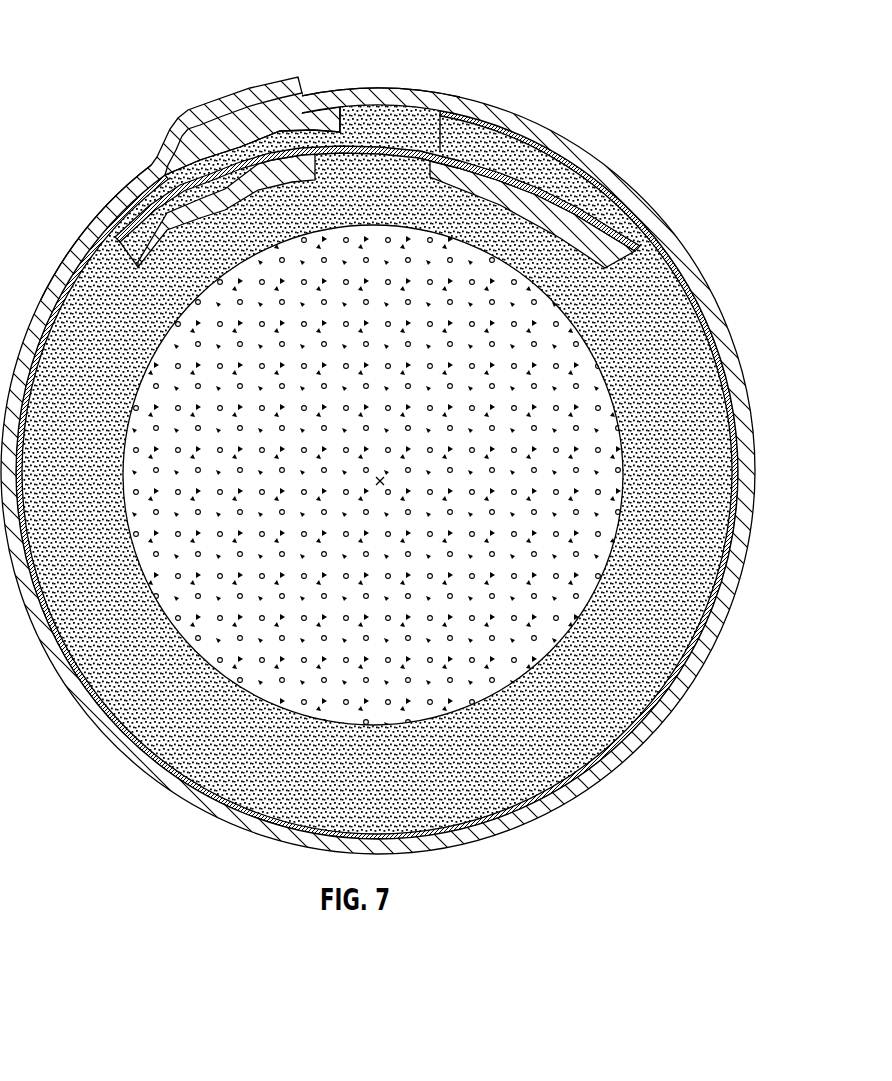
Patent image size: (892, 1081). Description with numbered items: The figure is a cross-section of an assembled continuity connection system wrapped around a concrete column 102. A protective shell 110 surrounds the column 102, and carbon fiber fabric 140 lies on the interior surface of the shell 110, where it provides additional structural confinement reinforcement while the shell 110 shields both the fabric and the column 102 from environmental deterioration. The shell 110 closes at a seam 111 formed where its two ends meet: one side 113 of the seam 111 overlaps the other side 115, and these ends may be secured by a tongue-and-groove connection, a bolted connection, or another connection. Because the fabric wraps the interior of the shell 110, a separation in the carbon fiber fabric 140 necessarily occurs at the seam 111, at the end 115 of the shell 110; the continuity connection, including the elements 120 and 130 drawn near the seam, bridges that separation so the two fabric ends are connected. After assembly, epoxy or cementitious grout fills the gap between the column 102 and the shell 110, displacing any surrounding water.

The column 102 is at (266, 463).
The shell 110 is at (523, 130).
The seam 111 is at (362, 72).
The side of shell seam 113 is at (477, 105).
The other side of shell seam 115 is at (106, 213).
The inner strip 120 is at (633, 228).
The pocket 130 is at (400, 132).
The carbon fiber fabric 140 is at (686, 285).